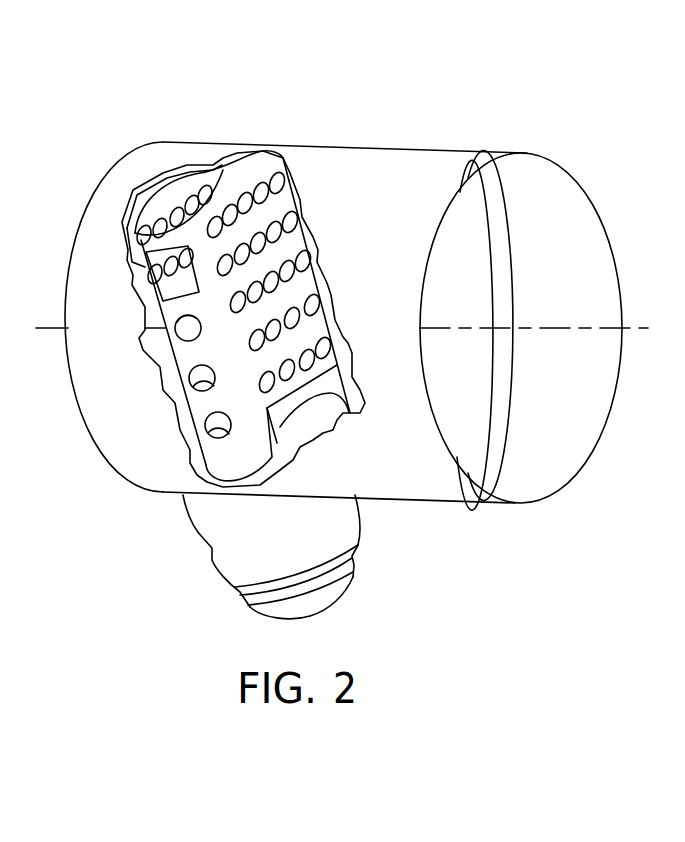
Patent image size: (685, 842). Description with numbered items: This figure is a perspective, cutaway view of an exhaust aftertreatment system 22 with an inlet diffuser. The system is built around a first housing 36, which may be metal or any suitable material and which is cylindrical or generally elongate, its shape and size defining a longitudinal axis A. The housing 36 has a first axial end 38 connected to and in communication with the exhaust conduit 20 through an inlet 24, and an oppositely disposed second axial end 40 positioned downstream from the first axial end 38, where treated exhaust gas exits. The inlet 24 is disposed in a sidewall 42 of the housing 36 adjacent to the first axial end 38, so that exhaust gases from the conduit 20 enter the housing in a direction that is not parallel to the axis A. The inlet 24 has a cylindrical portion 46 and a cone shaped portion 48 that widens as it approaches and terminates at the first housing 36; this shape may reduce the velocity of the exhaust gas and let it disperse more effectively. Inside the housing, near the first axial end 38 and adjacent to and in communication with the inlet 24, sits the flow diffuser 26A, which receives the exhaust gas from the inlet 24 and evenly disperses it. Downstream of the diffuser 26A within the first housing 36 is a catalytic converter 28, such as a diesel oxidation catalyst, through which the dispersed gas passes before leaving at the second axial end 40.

The exhaust conduit 20 is at (338, 600).
The exhaust aftertreatment system 22 is at (318, 158).
The inlet 24 is at (343, 538).
The flow diffuser 26A is at (233, 180).
The catalytic converter 28 is at (368, 146).
The first housing 36 is at (550, 158).
The first axial end 38 is at (97, 192).
The second axial end 40 is at (600, 210).
The sidewall 42 is at (395, 502).
The cylindrical portion 46 is at (247, 602).
The cone shaped portion 48 is at (217, 513).
The longitudinal axis A is at (572, 327).